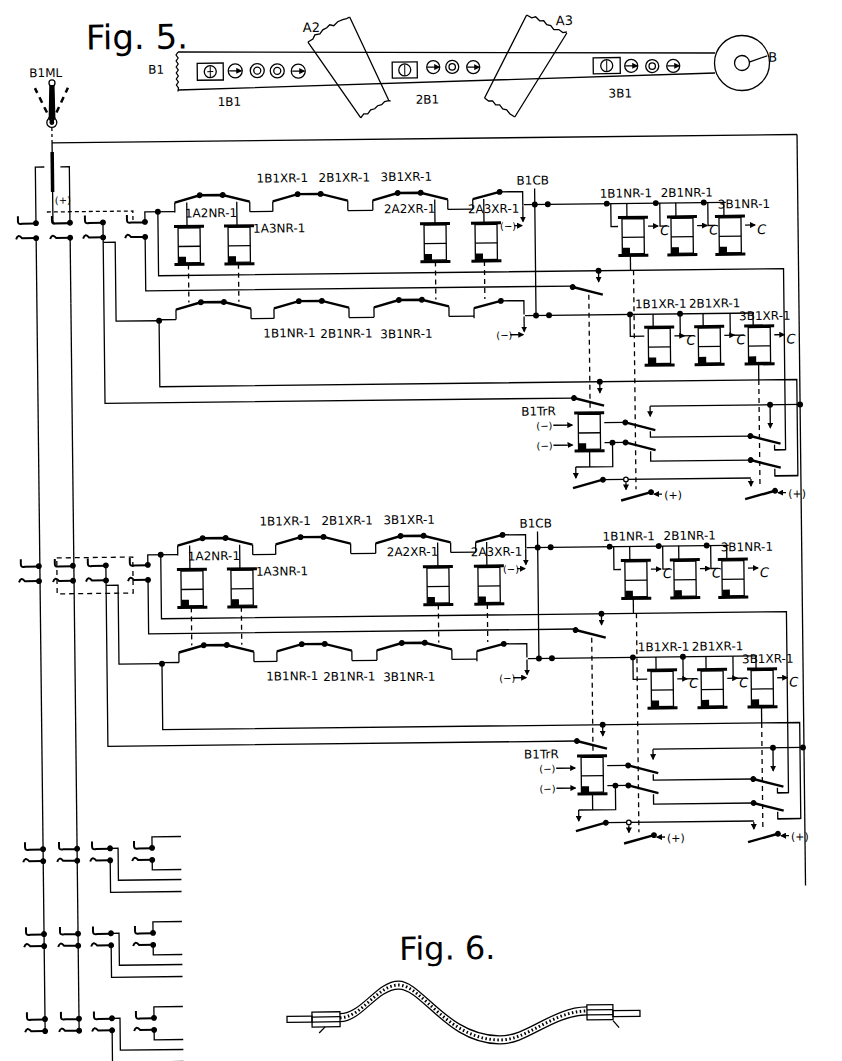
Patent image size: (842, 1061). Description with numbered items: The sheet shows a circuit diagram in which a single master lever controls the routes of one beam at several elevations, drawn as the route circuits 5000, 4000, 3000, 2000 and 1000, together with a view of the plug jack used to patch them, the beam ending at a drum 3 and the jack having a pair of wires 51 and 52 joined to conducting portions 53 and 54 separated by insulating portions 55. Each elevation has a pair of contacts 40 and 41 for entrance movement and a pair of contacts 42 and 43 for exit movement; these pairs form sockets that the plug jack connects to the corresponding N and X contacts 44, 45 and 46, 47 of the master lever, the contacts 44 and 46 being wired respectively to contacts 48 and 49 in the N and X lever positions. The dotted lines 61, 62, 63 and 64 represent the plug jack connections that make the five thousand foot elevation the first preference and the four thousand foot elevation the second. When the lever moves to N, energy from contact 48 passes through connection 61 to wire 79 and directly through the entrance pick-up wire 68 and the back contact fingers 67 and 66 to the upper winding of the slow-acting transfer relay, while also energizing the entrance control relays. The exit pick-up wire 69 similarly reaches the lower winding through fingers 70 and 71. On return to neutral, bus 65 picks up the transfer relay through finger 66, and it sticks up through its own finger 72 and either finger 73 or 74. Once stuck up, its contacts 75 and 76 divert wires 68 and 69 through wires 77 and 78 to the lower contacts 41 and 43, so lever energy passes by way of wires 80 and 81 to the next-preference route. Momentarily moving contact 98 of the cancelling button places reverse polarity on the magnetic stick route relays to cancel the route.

In FIG. 5, the drum 3 is at (764, 85).
In FIG. 5, the contact 40 is at (131, 214).
In FIG. 5, the contact 41 is at (131, 238).
In FIG. 5, the contact 42 is at (88, 214).
In FIG. 5, the contact 43 is at (96, 242).
In FIG. 5, the N contact 44 is at (55, 216).
In FIG. 5, the N contact 45 is at (60, 244).
In FIG. 5, the X contact 46 is at (24, 214).
In FIG. 5, the X contact 47 is at (25, 250).
In FIG. 5, the contact 48 is at (71, 186).
In FIG. 5, the contact 49 is at (31, 186).
In FIG. 5, the plug jack conducting connection 61 is at (74, 206).
In FIG. 5, the plug jack conducting connection 62 is at (70, 256).
In FIG. 5, the plug jack conducting connection 63 is at (95, 567).
In FIG. 5, the plug jack conducting connection 64 is at (92, 592).
In FIG. 5, the bus 65 is at (799, 164).
In FIG. 5, the contact finger 66 is at (623, 423).
In FIG. 5, the contact finger 67 is at (752, 443).
In FIG. 5, the entrance pick-up wire 68 is at (665, 273).
In FIG. 5, the exit pick-up wire 69 is at (680, 383).
In FIG. 5, the contact finger 70 is at (641, 448).
In FIG. 5, the contact finger 71 is at (752, 463).
In FIG. 5, the contact finger 72 is at (584, 487).
In FIG. 5, the contact finger 73 is at (645, 498).
In FIG. 5, the contact finger 74 is at (766, 498).
In FIG. 5, the contact 75 is at (608, 290).
In FIG. 5, the contact 76 is at (603, 406).
In FIG. 5, the wire 77 is at (146, 262).
In FIG. 5, the wire 78 is at (105, 362).
In FIG. 5, the wire 79 is at (160, 207).
In FIG. 5, the wire 80 is at (74, 396).
In FIG. 5, the wire 81 is at (40, 396).
In FIG. 5, the contact 98 is at (552, 204).
In FIG. 5, the track section circuit 1000 is at (106, 1024).
In FIG. 5, the track section circuit 2000 is at (104, 940).
In FIG. 5, the track section circuit 3000 is at (102, 856).
In FIG. 5, the 4000 foot elevation route 4000 is at (126, 540).
In FIG. 5, the 5000 foot elevation route 5000 is at (126, 180).
In FIG. 6, the wire 51 is at (420, 995).
In FIG. 6, the wire 52 is at (460, 1036).
In FIG. 6, the conducting portion 53 is at (293, 1014).
In FIG. 6, the conducting portion 54 is at (335, 1003).
In FIG. 6, the insulating portion 55 is at (463, 1035).